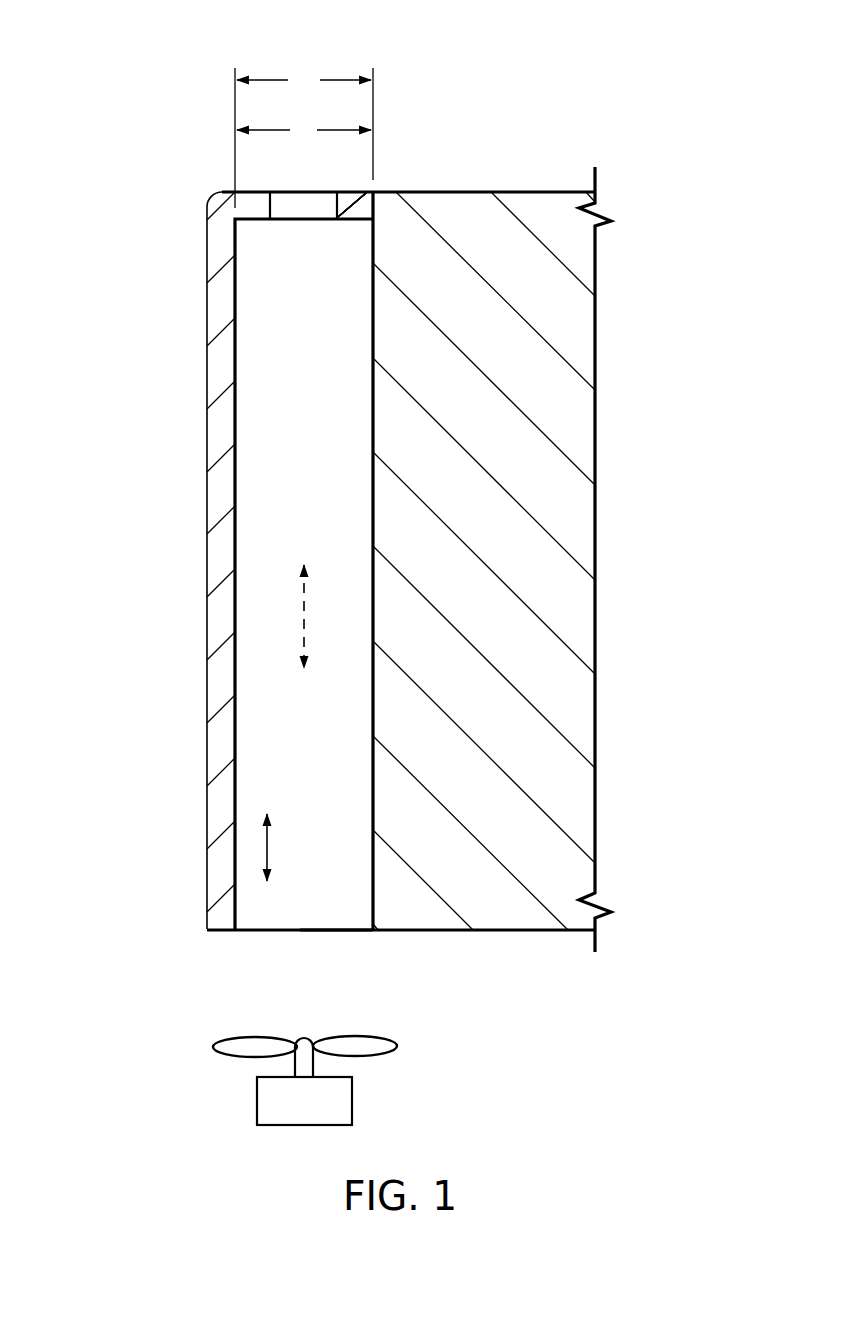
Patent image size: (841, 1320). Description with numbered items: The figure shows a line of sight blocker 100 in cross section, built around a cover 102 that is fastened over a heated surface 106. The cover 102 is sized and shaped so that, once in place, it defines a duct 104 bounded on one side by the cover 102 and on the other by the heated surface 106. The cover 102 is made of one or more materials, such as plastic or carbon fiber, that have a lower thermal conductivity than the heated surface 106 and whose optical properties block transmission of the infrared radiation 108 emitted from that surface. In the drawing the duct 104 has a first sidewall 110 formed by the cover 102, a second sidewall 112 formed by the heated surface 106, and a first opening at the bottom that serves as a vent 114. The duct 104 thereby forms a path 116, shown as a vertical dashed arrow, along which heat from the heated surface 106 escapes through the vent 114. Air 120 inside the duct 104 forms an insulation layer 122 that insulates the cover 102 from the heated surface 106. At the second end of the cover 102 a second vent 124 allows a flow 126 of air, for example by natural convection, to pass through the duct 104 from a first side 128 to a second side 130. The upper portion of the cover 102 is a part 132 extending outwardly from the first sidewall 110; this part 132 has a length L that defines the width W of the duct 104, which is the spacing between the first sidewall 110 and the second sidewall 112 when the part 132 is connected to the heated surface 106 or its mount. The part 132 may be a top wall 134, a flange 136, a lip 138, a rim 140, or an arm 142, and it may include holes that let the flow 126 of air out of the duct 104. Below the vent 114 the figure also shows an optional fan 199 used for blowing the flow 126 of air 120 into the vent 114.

The line of sight blocker 100 is at (175, 117).
The cover 102 is at (207, 690).
The duct 104 is at (328, 945).
The heated surface 106 is at (373, 410).
The infrared radiation 108 is at (271, 492).
The first sidewall 110 is at (207, 372).
The second sidewall 112 is at (373, 302).
The vent 114 is at (277, 945).
The path 116 is at (303, 634).
The air 120 is at (260, 299).
The insulation layer 122 is at (258, 549).
The second vent 124 is at (295, 202).
The flow of air 126 is at (267, 848).
The first side 128 is at (232, 951).
The second side 130 is at (401, 183).
The part 132 is at (477, 57).
The top wall 134 is at (352, 205).
The flange 136 is at (352, 205).
The lip 138 is at (352, 205).
The rim 140 is at (352, 205).
The arm 142 is at (352, 205).
The fan 199 is at (257, 1100).